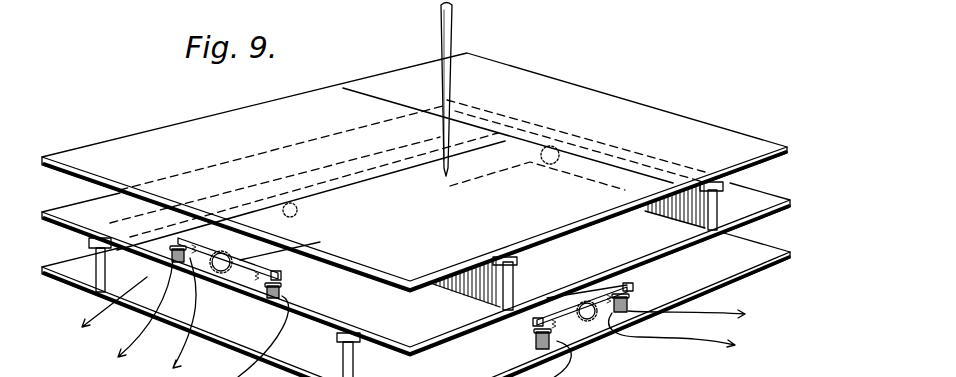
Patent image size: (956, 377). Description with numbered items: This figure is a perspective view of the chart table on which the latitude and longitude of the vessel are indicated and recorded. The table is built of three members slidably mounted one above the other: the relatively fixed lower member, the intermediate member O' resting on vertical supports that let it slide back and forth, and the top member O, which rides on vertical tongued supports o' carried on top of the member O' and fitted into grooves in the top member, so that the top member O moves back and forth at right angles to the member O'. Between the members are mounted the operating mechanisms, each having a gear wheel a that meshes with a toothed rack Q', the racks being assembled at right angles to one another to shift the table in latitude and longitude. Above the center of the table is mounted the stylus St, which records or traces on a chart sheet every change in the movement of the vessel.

The top member O is at (414, 172).
The intermediate member O' is at (414, 280).
The toothed rack Q' is at (442, 169).
The stylus St is at (452, 80).
The vertical tongued supports o' is at (578, 269).
The gear a is at (403, 286).